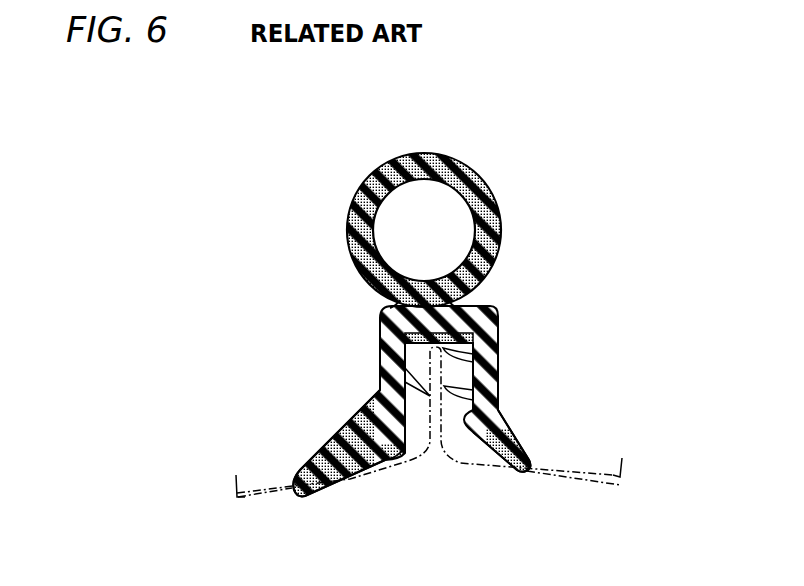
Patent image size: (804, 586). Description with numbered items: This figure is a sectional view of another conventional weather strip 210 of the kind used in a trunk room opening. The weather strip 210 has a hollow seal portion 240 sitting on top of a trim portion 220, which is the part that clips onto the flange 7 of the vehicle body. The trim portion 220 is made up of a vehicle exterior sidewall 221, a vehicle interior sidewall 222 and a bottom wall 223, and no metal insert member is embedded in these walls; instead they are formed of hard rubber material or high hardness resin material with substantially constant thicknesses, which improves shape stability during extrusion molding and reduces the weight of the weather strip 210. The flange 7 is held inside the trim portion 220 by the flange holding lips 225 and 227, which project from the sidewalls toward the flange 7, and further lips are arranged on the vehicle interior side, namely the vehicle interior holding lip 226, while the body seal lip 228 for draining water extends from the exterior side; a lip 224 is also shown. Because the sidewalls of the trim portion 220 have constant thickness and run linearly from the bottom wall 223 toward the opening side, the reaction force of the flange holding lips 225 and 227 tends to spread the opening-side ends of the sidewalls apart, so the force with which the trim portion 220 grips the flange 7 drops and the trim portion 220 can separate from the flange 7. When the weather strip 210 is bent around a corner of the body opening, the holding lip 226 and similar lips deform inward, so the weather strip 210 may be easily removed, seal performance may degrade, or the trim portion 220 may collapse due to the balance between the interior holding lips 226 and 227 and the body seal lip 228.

The weather strip 210 is at (336, 250).
The hollow seal portion 240 is at (502, 227).
The trim portion 220 is at (499, 332).
The vehicle exterior sidewall 221 is at (380, 343).
The vehicle interior sidewall 222 is at (499, 363).
The bottom wall 223 is at (400, 308).
The holding lip 224 is at (407, 417).
The flange holding lip 225 is at (382, 361).
The vehicle interior holding lip 226 is at (522, 442).
The flange holding lip 227 is at (500, 393).
The body seal lip 228 is at (312, 451).
The flange 7 is at (380, 390).